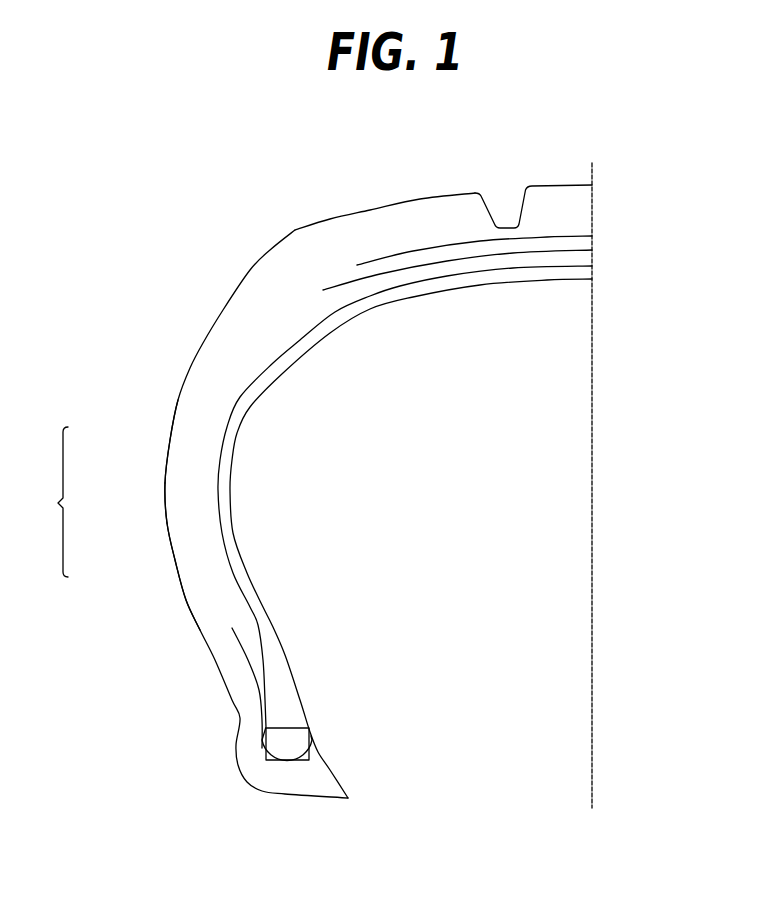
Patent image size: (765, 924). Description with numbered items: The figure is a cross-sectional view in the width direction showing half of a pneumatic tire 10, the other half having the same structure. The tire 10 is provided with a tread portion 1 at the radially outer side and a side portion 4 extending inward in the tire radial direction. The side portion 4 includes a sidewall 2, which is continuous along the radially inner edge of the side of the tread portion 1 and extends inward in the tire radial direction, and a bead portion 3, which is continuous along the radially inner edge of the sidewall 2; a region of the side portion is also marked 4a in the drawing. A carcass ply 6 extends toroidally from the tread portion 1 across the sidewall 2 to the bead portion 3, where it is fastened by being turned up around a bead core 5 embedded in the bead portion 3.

The tread portion 1 is at (428, 222).
The sidewall 2 is at (160, 429).
The bead portion 3 is at (190, 612).
The side portion 4 is at (55, 502).
The sidewall outer surface region 4a is at (165, 481).
The bead core 5 is at (288, 743).
The carcass ply 6 is at (230, 405).
The pneumatic tire 10 is at (265, 230).